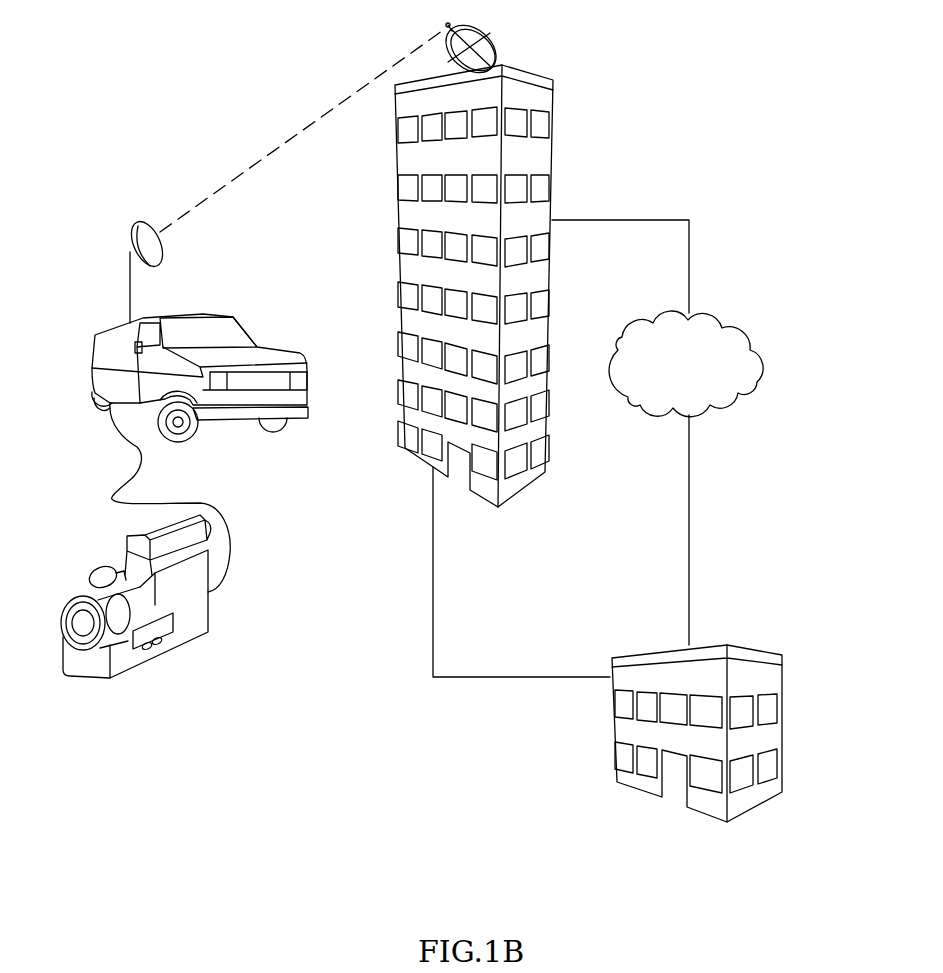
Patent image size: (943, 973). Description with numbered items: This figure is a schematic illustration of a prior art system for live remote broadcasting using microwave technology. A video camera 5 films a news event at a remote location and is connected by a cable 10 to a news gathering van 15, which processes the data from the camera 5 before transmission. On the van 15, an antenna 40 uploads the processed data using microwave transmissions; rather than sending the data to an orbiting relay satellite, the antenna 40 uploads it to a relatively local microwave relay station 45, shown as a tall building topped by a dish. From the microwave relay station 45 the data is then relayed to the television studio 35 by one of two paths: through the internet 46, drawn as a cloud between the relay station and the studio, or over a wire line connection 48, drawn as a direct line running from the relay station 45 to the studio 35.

The video camera 5 is at (190, 618).
The cable 10 is at (132, 470).
The satellite news gathering van 15 is at (103, 343).
The antenna 40 is at (140, 225).
The microwave relay station 45 is at (555, 108).
The internet 46 is at (742, 332).
The wire line connection 48 is at (475, 677).
The television studio 35 is at (758, 650).